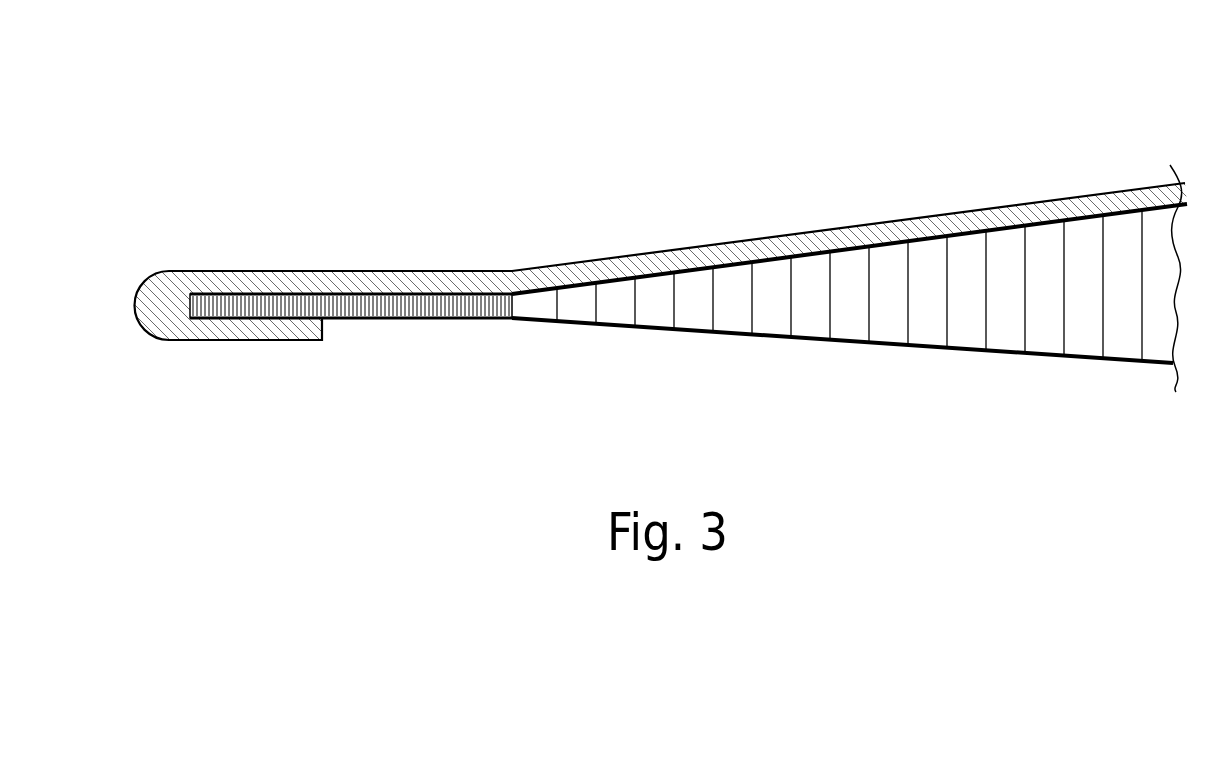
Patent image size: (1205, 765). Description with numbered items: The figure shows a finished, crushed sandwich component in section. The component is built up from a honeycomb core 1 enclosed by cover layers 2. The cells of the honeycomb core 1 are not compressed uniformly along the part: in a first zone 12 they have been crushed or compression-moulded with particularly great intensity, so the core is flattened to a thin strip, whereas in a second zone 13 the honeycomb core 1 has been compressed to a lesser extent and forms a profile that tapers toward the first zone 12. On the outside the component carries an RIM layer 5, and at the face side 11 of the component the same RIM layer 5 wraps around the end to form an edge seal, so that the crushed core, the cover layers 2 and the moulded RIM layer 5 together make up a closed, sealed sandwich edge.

The honeycomb core 1 is at (280, 302).
The cover layers 2 is at (727, 334).
The RIM layer 5 is at (784, 250).
The face side 11 is at (174, 252).
The first zone 12 is at (365, 172).
The second zone 13 is at (864, 137).